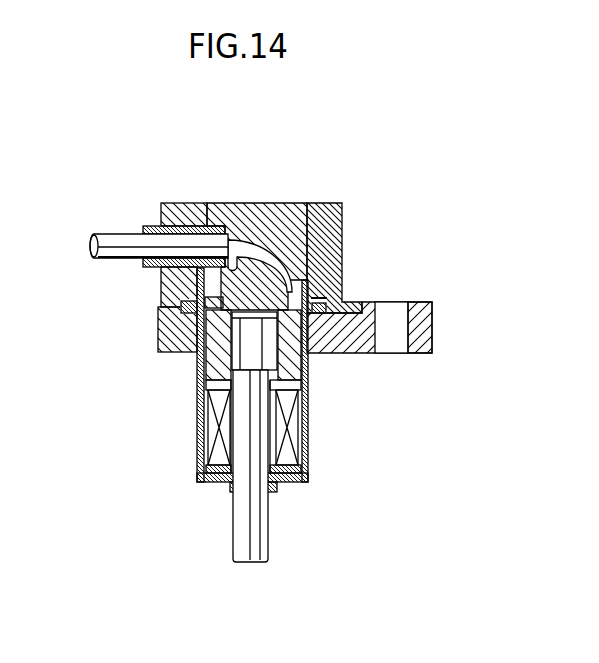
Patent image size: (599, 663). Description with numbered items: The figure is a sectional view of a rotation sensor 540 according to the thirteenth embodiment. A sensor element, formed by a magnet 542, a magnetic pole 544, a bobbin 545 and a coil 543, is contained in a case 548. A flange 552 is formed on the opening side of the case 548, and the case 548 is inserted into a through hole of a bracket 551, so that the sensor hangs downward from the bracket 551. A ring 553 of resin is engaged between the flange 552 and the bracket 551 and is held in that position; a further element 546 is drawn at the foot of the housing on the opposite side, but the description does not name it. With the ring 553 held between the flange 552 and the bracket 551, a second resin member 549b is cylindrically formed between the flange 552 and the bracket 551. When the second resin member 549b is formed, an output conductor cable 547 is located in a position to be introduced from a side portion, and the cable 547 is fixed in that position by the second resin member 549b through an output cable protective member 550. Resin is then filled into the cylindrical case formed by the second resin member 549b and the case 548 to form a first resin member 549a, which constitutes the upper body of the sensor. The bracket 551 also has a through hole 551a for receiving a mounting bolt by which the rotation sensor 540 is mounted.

The rotation sensor 540 is at (168, 164).
The magnet 542 is at (198, 368).
The coil 543 is at (198, 449).
The magnetic pole 544 is at (248, 528).
The bobbin 545 is at (160, 338).
The O-ring seal 546 is at (333, 299).
The output conductor cable 547 is at (113, 247).
The case 548 is at (311, 417).
The first resin member 549a is at (303, 203).
The second resin member 549b is at (333, 228).
The output cable protective member 550 is at (144, 266).
The bracket 551 is at (358, 344).
The through hole 551a is at (402, 298).
The flange 552 is at (392, 313).
The ring 553 is at (160, 312).